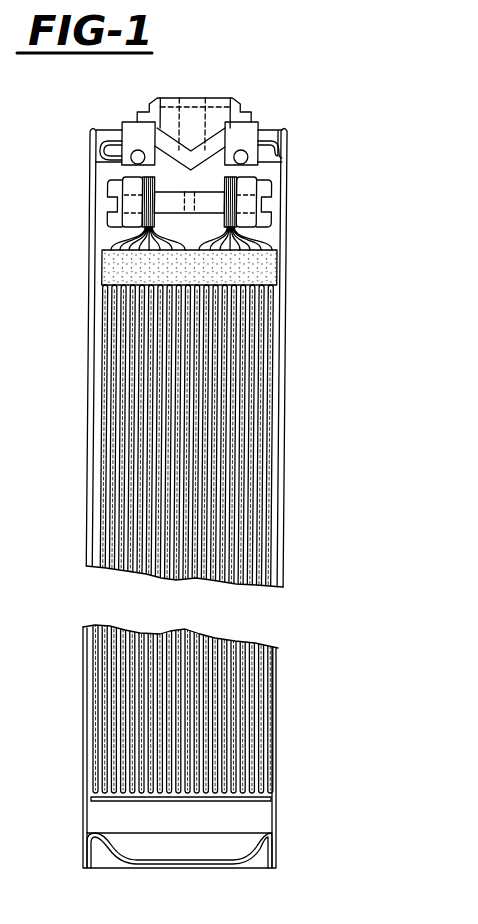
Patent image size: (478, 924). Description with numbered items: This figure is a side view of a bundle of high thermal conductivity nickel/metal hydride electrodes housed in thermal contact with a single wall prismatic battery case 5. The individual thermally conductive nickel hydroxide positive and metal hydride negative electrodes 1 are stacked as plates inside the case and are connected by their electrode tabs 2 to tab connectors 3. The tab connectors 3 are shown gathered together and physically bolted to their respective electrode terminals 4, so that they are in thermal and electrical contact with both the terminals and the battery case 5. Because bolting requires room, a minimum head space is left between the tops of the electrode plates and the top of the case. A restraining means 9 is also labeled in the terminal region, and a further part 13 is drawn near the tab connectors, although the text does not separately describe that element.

The electrodes 1 is at (276, 422).
The electrode tabs 2 is at (110, 240).
The tab connectors 3 is at (252, 190).
The electrode terminals 4 is at (212, 100).
The battery case 5 is at (287, 128).
The restraining means 9 is at (262, 233).
The clamp bracket 13 is at (268, 190).